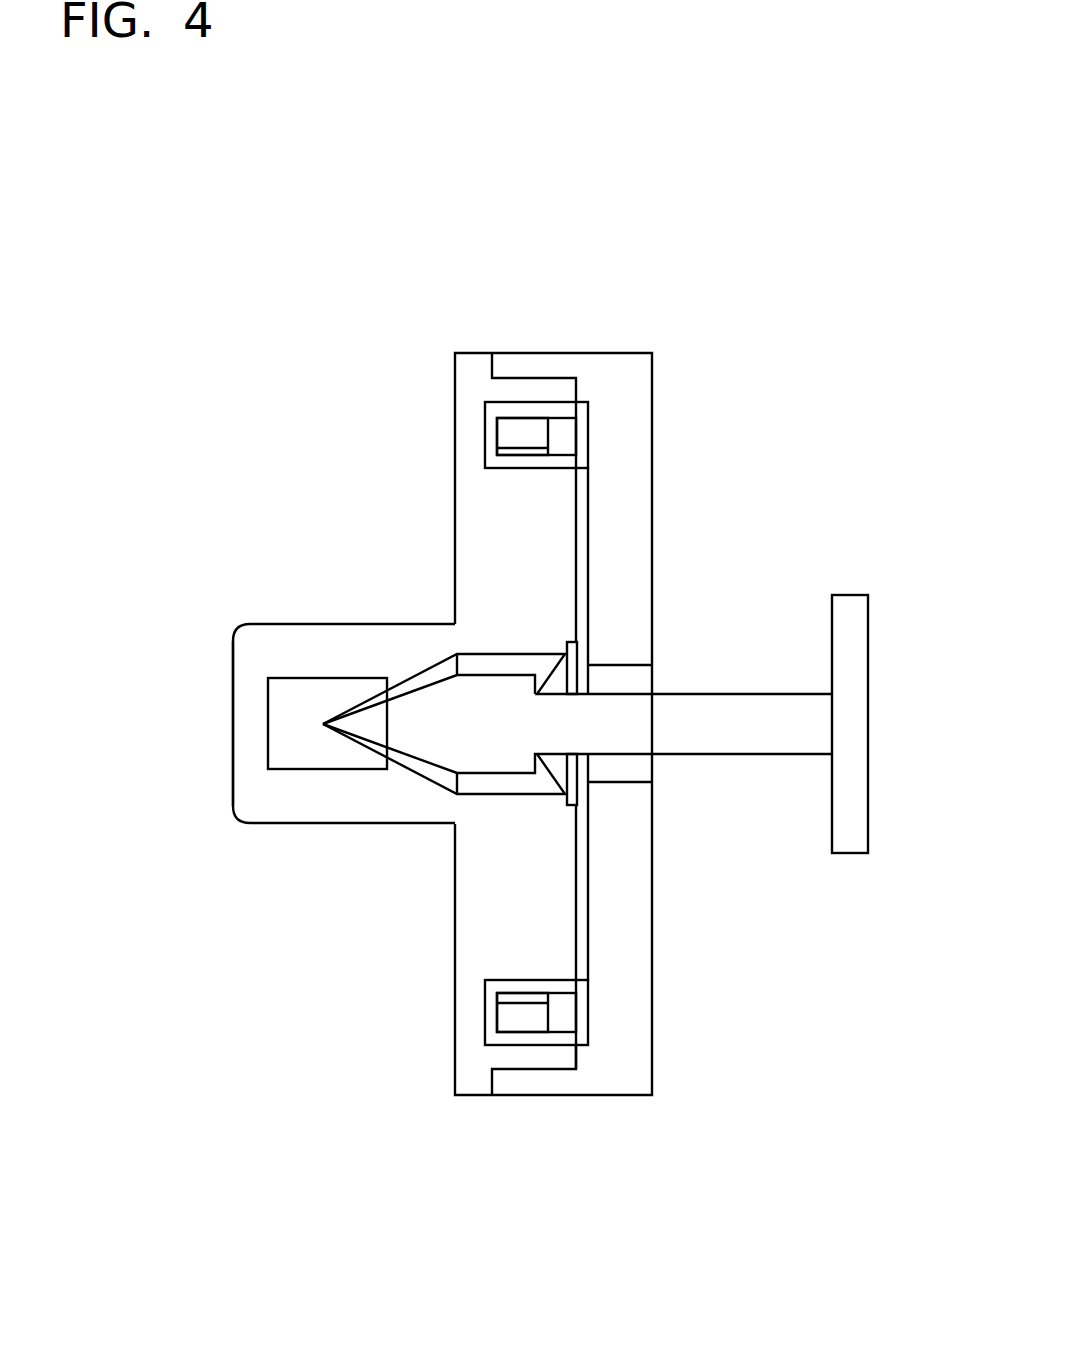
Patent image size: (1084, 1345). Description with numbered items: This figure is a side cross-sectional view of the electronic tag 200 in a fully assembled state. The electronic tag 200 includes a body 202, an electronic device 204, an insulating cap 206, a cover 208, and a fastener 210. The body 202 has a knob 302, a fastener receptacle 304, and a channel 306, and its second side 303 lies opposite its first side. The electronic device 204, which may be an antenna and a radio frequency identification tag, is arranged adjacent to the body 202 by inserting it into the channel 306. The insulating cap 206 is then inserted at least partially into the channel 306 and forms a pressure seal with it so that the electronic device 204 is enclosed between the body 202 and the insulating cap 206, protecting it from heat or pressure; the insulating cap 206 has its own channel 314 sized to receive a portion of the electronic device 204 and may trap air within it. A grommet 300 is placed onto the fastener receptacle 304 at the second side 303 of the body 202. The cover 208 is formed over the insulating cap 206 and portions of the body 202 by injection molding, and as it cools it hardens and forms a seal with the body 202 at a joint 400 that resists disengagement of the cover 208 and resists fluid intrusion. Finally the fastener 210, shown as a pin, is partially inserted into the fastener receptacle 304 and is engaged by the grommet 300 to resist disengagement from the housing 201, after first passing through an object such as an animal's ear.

The electronic tag 200 is at (812, 148).
The housing 201 is at (250, 987).
The body 202 is at (325, 658).
The electronic device 204 is at (521, 438).
The insulating cap 206 is at (580, 455).
The cover 208 is at (627, 382).
The fastener 210 is at (848, 625).
The grommet 300 is at (542, 686).
The knob 302 is at (232, 727).
The second side 303 is at (575, 866).
The fastener receptacle 304 is at (320, 765).
The channel 306 is at (492, 438).
The channel 314 is at (575, 435).
The joint 400 is at (546, 380).